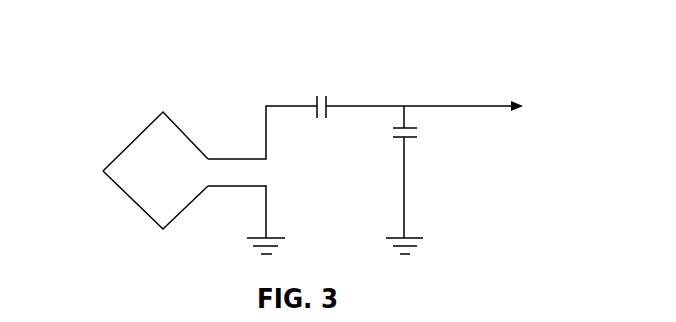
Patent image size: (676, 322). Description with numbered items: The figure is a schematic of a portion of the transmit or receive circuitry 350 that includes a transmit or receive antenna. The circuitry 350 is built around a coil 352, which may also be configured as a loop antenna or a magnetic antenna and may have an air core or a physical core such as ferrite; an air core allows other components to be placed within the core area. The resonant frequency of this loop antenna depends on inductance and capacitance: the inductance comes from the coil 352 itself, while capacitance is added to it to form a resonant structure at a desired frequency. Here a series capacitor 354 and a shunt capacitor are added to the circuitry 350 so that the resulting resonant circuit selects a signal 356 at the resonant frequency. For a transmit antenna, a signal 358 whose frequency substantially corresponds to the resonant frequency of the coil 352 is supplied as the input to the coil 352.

The transmit or receive circuitry 350 is at (204, 57).
The coil 352 is at (136, 140).
The capacitor 354 is at (330, 100).
The signal 356 is at (410, 140).
The signal 358 is at (444, 106).